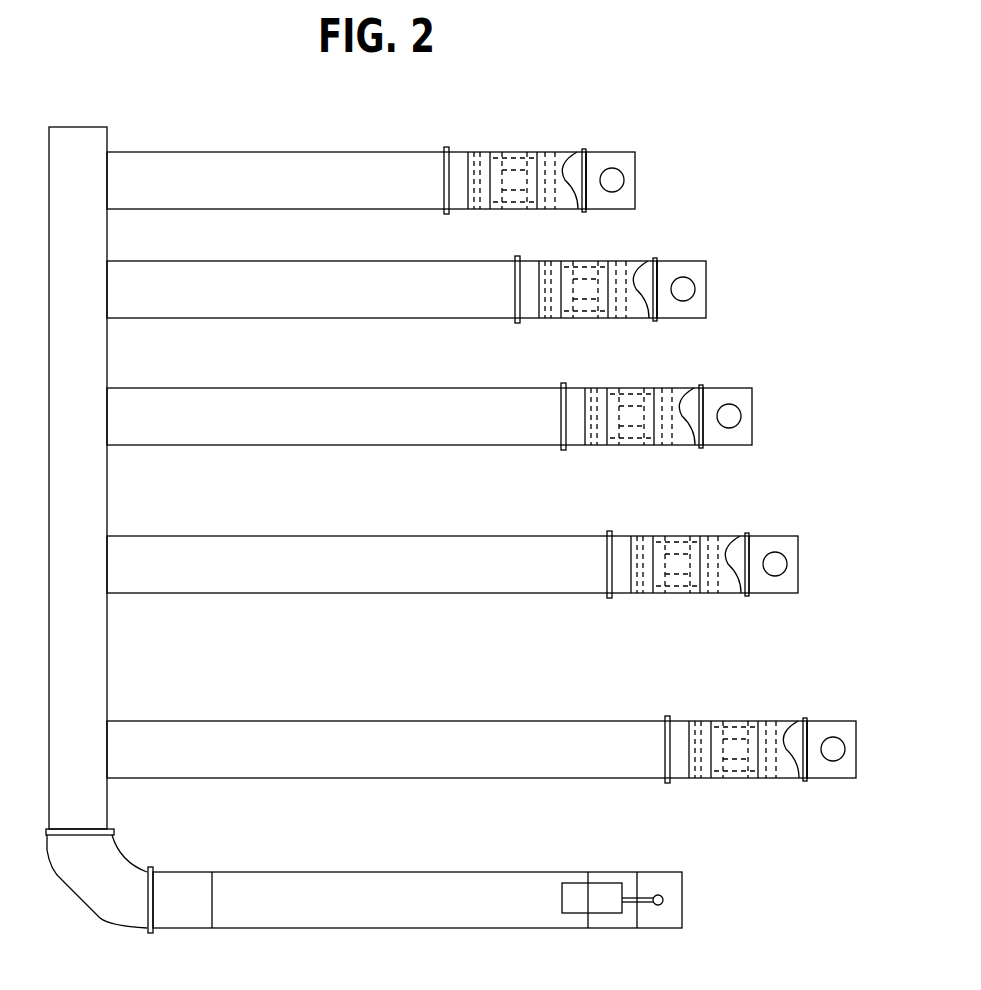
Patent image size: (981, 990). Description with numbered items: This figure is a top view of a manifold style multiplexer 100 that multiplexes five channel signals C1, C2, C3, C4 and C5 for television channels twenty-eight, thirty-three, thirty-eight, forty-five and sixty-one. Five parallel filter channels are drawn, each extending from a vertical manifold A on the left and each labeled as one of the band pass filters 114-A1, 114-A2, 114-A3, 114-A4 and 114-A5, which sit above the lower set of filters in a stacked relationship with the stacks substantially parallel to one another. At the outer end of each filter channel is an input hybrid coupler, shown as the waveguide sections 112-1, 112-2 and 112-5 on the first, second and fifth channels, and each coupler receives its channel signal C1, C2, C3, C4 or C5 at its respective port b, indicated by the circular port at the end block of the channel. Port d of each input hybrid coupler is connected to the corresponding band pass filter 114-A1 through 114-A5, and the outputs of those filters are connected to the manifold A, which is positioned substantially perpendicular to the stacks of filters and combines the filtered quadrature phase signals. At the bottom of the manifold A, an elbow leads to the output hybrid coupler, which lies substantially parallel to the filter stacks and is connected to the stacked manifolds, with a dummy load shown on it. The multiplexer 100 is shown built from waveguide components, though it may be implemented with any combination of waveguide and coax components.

The manifold style multiplexer 100 is at (642, 80).
The manifold A is at (78, 170).
The band pass filter 114-A1 is at (262, 152).
The band pass filter 114-A2 is at (262, 261).
The band pass filter 114-A3 is at (266, 388).
The band pass filter 114-A4 is at (268, 536).
The band pass filter 114-A5 is at (272, 721).
The input hybrid coupler 112-1 is at (513, 152).
The input hybrid coupler 112-2 is at (585, 262).
The input hybrid coupler 112-5 is at (737, 722).
The channel signal C1 is at (612, 183).
The channel signal C2 is at (683, 292).
The channel signal C3 is at (733, 420).
The channel signal C4 is at (781, 568).
The channel signal C5 is at (832, 743).
The port b is at (633, 153).